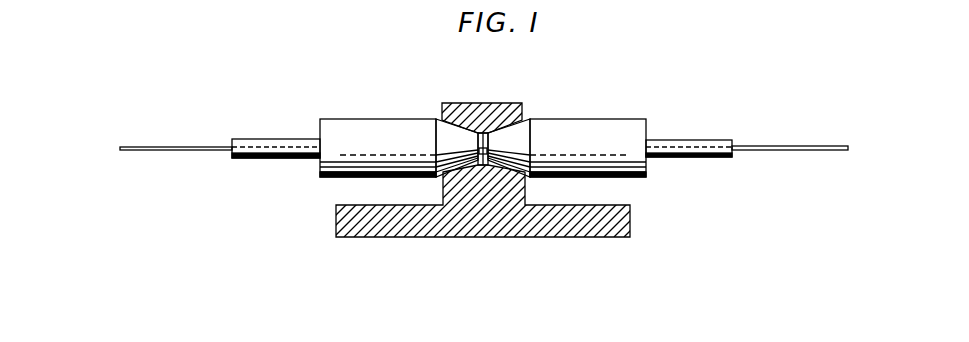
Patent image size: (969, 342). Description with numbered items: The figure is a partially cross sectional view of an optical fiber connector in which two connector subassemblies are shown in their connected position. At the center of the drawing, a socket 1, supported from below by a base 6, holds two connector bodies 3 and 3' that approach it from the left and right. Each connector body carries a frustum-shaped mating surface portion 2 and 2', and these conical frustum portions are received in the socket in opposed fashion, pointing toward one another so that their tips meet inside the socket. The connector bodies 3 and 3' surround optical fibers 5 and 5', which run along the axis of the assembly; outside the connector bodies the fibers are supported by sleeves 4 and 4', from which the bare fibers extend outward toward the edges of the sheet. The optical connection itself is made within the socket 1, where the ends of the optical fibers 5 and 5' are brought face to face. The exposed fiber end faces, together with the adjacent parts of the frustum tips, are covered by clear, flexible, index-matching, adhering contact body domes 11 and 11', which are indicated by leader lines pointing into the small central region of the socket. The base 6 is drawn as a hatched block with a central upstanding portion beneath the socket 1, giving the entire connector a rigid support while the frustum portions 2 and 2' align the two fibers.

The socket 1 is at (485, 106).
The frustum-shaped mating surface portion 2 is at (441, 122).
The frustum-shaped mating surface portion 2' is at (521, 121).
The connector body 3 is at (378, 122).
The connector body 3' is at (588, 121).
The sleeve 4 is at (276, 126).
The sleeve 4' is at (689, 124).
The optical fiber 5 is at (176, 122).
The optical fiber 5' is at (790, 121).
The base 6 is at (630, 222).
The contact body dome 11 is at (464, 208).
The contact body dome 11' is at (504, 208).